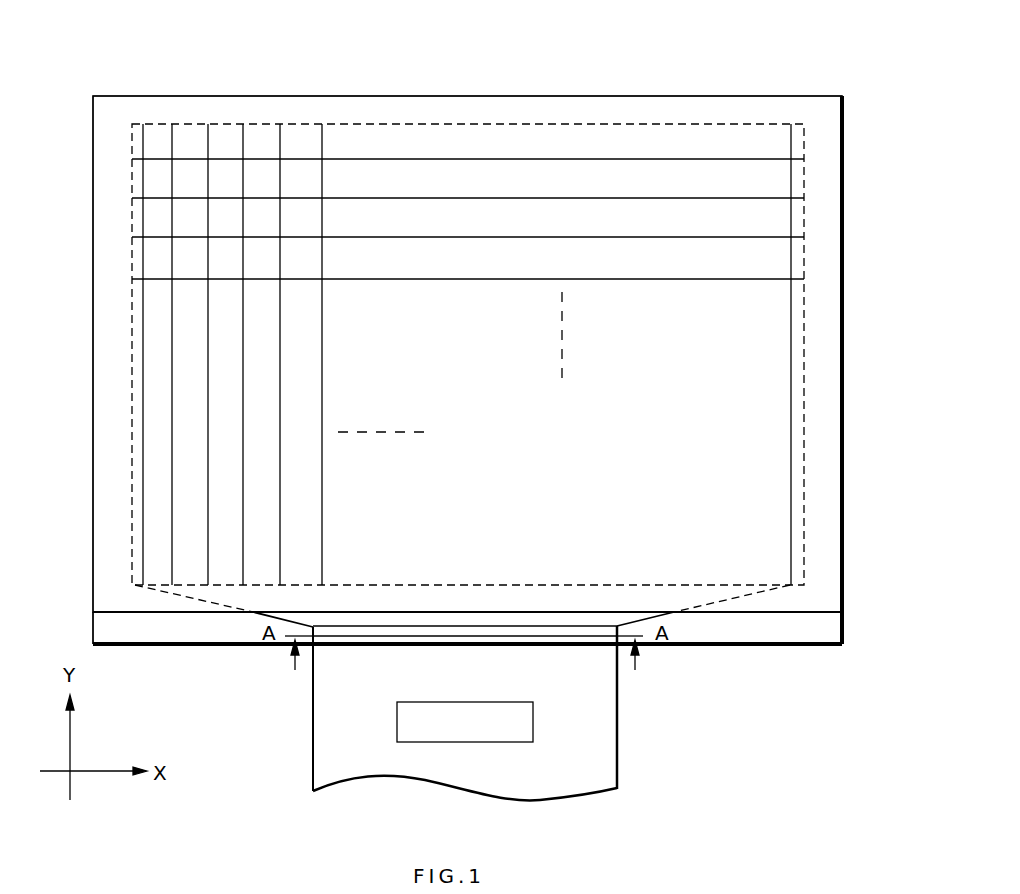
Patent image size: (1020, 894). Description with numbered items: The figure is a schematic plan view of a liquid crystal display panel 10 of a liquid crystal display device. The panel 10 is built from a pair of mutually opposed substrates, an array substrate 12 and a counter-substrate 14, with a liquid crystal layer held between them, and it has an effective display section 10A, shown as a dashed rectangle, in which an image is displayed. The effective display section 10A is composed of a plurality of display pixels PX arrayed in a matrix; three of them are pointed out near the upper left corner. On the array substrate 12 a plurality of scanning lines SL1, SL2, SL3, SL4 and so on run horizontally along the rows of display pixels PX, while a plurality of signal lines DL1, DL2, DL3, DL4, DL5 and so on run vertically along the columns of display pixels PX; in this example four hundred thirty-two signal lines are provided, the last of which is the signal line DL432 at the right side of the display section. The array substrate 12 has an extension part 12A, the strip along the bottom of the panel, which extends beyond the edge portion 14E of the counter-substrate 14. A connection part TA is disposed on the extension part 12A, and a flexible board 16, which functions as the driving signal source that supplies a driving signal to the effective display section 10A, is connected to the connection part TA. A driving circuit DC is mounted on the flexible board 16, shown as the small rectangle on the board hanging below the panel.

The liquid crystal display panel 10 is at (816, 84).
The effective display section 10A is at (804, 344).
The array substrate 12 is at (845, 626).
The extension part 12A is at (86, 613).
The counter-substrate 14 is at (825, 490).
The edge portion 14E is at (774, 614).
The flexible board 16 is at (620, 748).
The display pixel PX is at (157, 129).
The scanning line SL1 is at (512, 159).
The scanning line SL2 is at (512, 198).
The scanning line SL3 is at (512, 237).
The scanning line SL4 is at (512, 279).
The signal line DL1 is at (143, 528).
The signal line DL2 is at (172, 456).
The signal line DL3 is at (208, 480).
The signal line DL4 is at (243, 521).
The signal line DL5 is at (280, 555).
The signal line DL432 is at (790, 513).
The connection part TA is at (353, 639).
The driving circuit DC is at (460, 701).